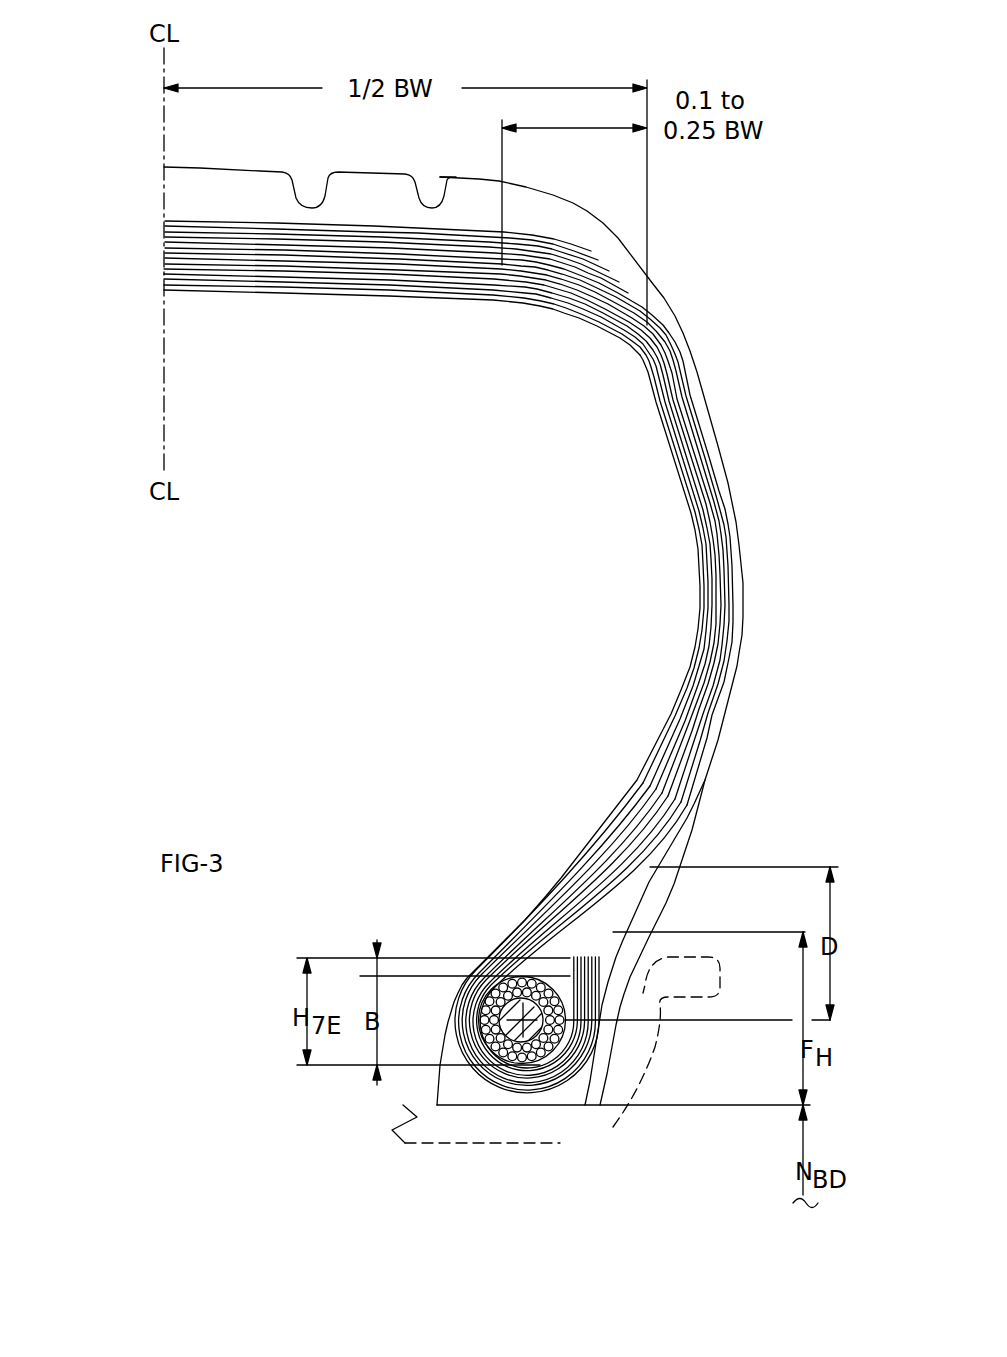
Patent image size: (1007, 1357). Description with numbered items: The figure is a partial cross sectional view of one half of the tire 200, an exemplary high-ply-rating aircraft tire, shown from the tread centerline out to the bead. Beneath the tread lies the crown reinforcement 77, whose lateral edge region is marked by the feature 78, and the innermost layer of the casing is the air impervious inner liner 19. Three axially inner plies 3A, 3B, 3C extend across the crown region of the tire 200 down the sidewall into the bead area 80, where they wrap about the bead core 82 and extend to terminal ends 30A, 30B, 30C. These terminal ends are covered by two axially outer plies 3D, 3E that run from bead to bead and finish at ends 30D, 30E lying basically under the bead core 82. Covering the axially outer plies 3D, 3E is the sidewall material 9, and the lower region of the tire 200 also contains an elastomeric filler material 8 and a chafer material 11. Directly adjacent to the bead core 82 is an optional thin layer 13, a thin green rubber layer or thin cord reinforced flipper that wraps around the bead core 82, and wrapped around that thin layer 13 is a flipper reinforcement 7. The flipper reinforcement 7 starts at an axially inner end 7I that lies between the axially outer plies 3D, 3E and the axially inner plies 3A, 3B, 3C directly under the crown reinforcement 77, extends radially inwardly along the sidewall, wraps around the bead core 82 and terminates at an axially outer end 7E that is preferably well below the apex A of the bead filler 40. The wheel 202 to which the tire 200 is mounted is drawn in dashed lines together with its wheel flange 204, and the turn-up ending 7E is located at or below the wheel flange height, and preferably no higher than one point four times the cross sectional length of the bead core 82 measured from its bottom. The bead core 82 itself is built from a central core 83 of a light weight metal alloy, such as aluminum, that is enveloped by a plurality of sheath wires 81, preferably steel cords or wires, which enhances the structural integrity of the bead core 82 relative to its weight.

The tire 200 is at (88, 200).
The crown reinforcement 77 is at (308, 266).
The axially inner end of flipper reinforcement 7I is at (512, 284).
The belt edge 78 is at (650, 333).
The inner liner 19 is at (657, 405).
The axially inner ply 3A is at (705, 580).
The axially inner ply 3B is at (707, 620).
The axially inner ply 3C is at (703, 660).
The axially outer ply 3D is at (727, 587).
The axially outer ply 3E is at (733, 553).
The terminal end of axially inner ply 30A is at (700, 737).
The terminal end of axially inner ply 30B is at (713, 686).
The terminal end of axially inner ply 30C is at (718, 640).
The end of axially outer ply 30D is at (490, 1085).
The end of axially outer ply 30E is at (514, 1099).
The sidewall material 9 is at (697, 797).
The elastomeric filler material 8 is at (662, 845).
The apex of bead filler A is at (590, 893).
The flipper reinforcement 7 is at (572, 907).
The axially outer end of flipper reinforcement 7E is at (573, 957).
The bead area 80 is at (517, 967).
The sheath wires 81 is at (495, 1050).
The bead core 82 is at (513, 1013).
The central core 83 is at (530, 1027).
The thin layer 13 is at (570, 1017).
The bead filler 40 is at (600, 911).
The chafer material 11 is at (572, 1090).
The wheel flange 204 is at (660, 1034).
The wheel 202 is at (440, 1127).